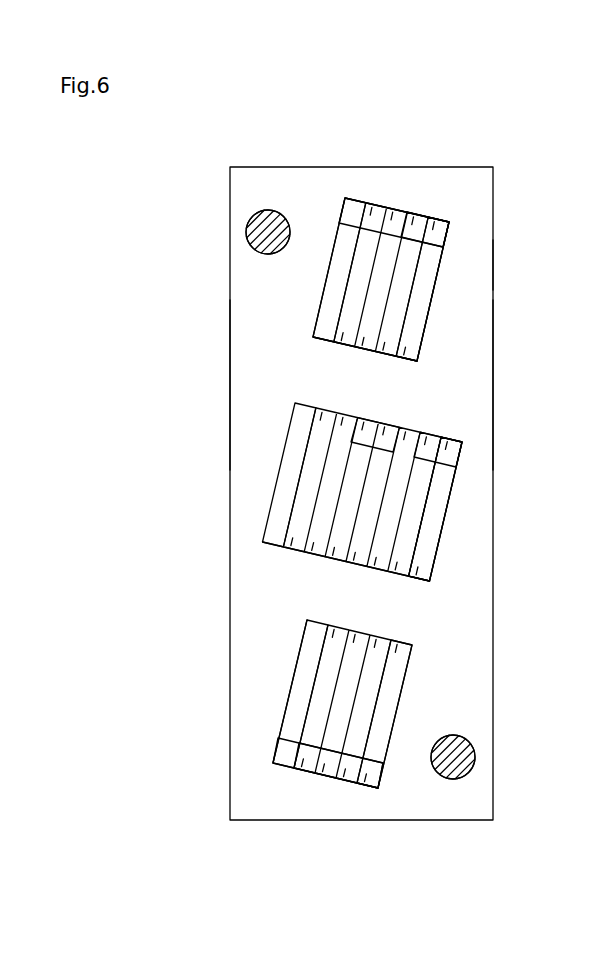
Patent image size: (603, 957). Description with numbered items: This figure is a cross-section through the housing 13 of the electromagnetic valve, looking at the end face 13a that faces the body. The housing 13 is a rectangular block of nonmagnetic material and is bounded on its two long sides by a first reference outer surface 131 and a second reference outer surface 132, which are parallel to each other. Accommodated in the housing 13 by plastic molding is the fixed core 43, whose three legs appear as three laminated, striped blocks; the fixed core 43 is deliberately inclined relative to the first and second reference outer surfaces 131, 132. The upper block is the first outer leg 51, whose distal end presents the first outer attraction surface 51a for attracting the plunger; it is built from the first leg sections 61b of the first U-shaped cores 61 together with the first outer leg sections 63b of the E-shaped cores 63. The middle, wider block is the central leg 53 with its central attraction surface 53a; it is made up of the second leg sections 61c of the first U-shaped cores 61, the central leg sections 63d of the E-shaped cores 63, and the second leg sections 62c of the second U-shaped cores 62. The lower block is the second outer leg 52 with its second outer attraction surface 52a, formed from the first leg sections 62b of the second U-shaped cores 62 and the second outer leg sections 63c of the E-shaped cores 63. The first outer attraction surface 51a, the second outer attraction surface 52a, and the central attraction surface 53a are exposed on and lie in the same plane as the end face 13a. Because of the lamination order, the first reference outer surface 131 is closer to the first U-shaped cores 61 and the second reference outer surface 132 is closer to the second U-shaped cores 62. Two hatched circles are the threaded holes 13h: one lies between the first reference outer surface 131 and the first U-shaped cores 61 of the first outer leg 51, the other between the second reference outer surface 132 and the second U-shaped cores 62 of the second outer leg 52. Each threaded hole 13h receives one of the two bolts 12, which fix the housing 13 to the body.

The bolt 12 is at (275, 211).
The housing 13 is at (493, 200).
The end face 13a is at (475, 260).
The threaded hole 13h is at (247, 228).
The first reference outer surface 131 is at (230, 380).
The second reference outer surface 132 is at (493, 380).
The fixed core 43 is at (345, 198).
The first outer leg 51 is at (321, 288).
The first outer attraction surface 51a is at (418, 300).
The second outer leg 52 is at (292, 680).
The second outer attraction surface 52a is at (395, 682).
The central leg 53 is at (280, 463).
The central attraction surface 53a is at (437, 500).
The first U-shaped core 61 is at (362, 368).
The first leg section 61b is at (400, 217).
The second leg section 61c is at (297, 568).
The second U-shaped core 62 is at (420, 566).
The first leg section 62b is at (352, 780).
The second leg section 62c is at (440, 440).
The E-shaped core 63 is at (312, 733).
The first outer leg section 63b is at (440, 222).
The second outer leg section 63c is at (305, 775).
The central leg section 63d is at (392, 428).